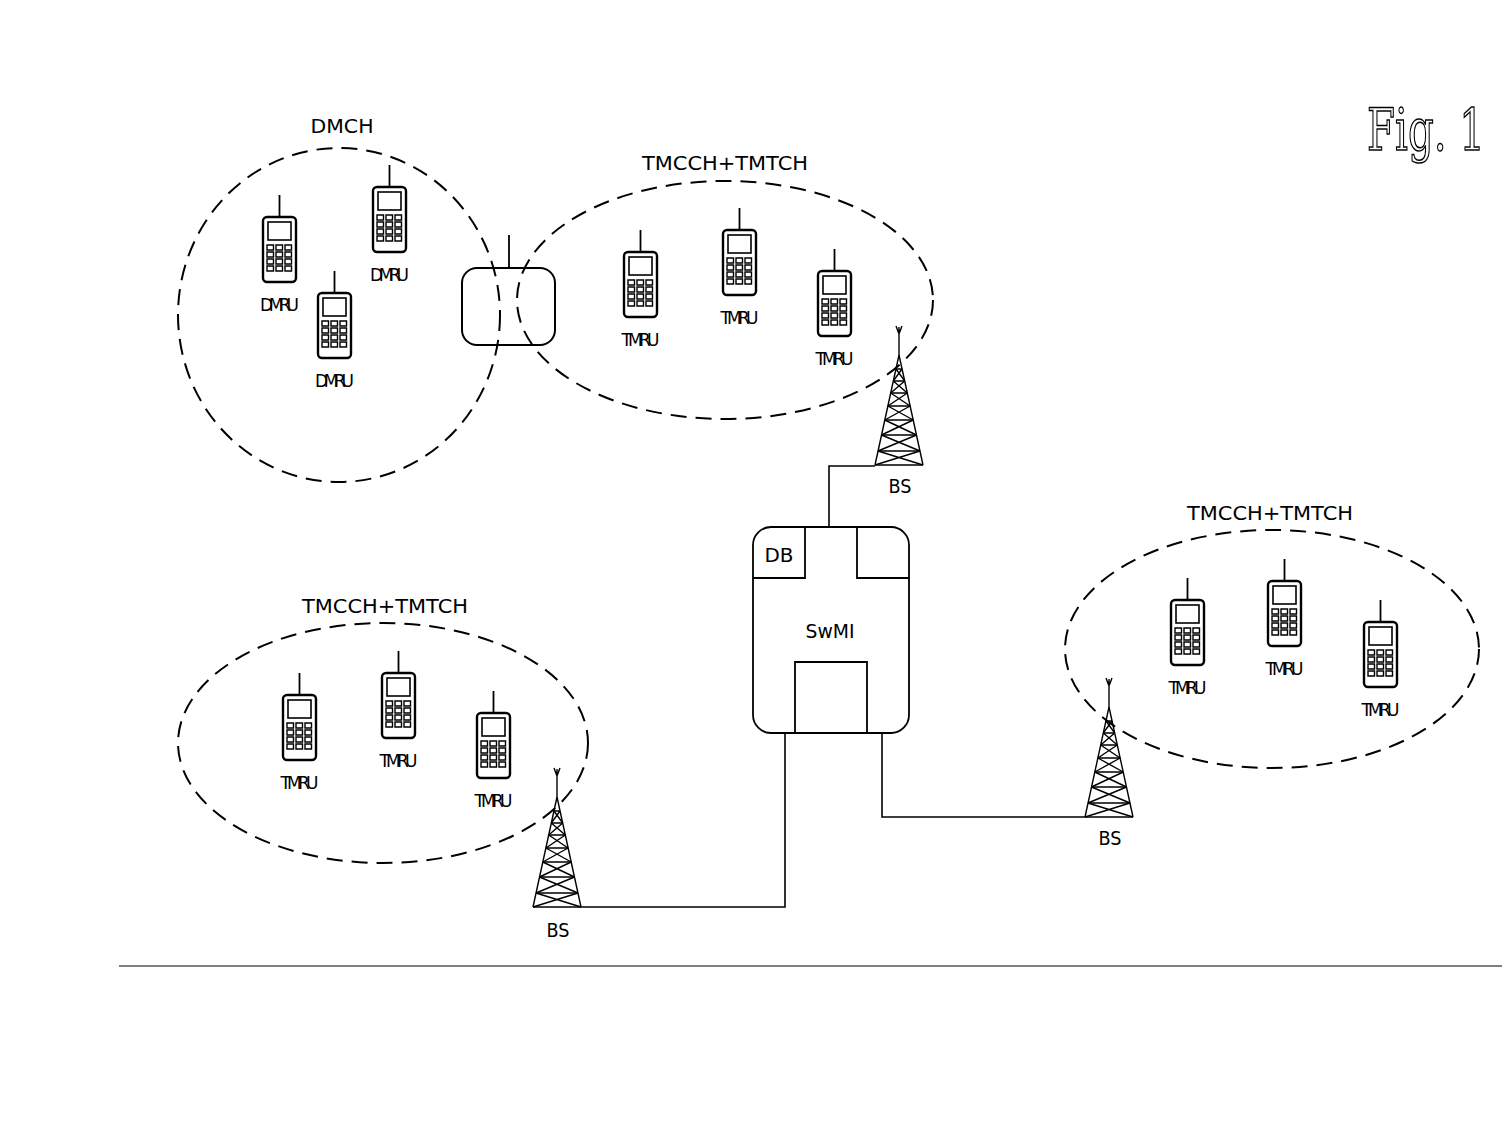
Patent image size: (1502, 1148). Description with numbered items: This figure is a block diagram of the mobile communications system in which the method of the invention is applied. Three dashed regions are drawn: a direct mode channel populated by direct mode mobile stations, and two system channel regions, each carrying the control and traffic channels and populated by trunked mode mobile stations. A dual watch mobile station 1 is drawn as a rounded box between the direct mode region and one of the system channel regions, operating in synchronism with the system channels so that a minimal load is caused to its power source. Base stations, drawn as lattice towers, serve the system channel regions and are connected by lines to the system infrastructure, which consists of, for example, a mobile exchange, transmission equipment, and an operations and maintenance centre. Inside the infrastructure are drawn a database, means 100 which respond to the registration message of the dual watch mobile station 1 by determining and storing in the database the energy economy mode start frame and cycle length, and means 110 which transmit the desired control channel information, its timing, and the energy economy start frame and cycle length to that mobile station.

The direct mode radio unit acting as gateway (DMRU 1) 1 is at (508, 290).
The means responsive to the registration message 100 is at (831, 697).
The means for transmitting 110 is at (883, 552).